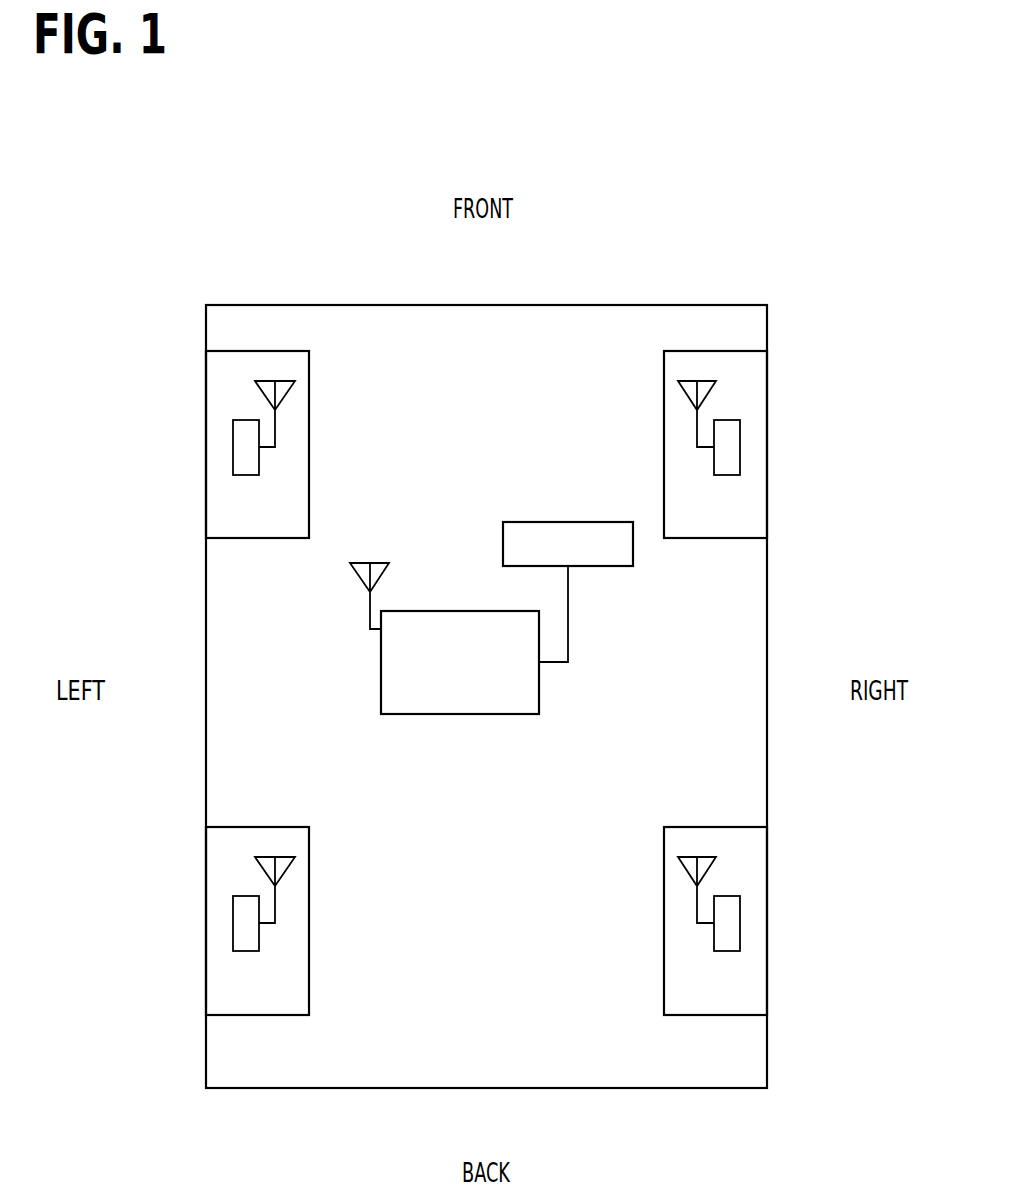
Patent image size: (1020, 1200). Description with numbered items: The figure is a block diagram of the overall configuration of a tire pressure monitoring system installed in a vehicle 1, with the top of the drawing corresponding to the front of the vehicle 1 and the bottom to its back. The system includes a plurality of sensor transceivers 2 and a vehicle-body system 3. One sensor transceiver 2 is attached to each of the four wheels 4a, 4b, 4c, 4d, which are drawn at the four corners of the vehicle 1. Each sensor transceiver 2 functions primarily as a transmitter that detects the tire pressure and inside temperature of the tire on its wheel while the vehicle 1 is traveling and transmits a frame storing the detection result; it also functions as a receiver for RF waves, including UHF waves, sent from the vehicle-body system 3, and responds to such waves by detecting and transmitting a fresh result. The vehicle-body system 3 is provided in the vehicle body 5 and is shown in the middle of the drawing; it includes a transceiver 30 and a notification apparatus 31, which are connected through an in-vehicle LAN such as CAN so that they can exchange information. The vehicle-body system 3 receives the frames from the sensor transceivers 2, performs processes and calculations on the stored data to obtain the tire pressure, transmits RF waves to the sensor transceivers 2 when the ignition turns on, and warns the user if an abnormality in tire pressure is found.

The vehicle 1 is at (607, 292).
The vehicle body 5 is at (687, 305).
The sensor transceiver 2 is at (233, 449).
The wheel 4a is at (742, 351).
The wheel 4b is at (232, 351).
The wheel 4c is at (742, 1015).
The wheel 4d is at (232, 1015).
The vehicle-body system 3 is at (383, 618).
The transceiver 30 is at (443, 611).
The notification apparatus 31 is at (543, 522).